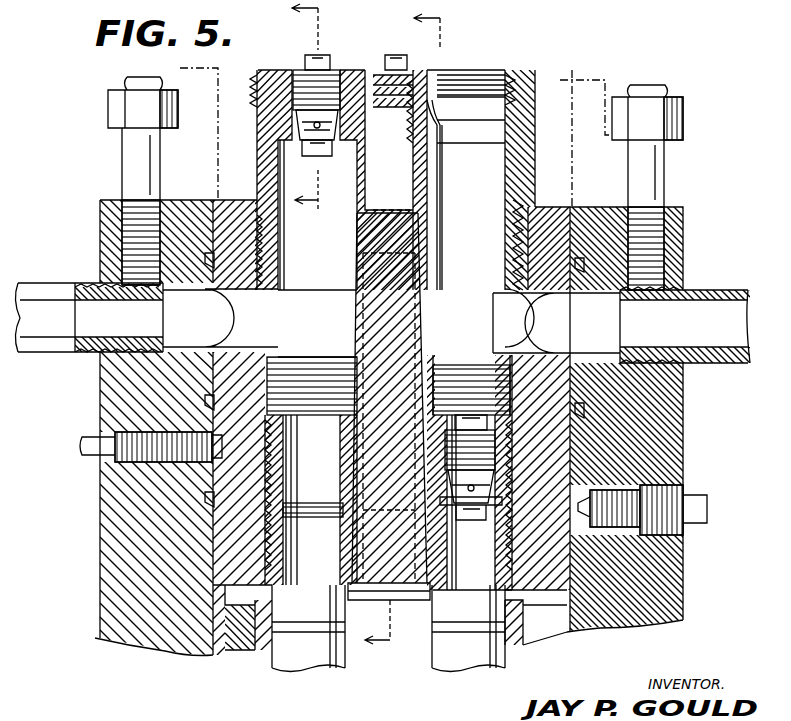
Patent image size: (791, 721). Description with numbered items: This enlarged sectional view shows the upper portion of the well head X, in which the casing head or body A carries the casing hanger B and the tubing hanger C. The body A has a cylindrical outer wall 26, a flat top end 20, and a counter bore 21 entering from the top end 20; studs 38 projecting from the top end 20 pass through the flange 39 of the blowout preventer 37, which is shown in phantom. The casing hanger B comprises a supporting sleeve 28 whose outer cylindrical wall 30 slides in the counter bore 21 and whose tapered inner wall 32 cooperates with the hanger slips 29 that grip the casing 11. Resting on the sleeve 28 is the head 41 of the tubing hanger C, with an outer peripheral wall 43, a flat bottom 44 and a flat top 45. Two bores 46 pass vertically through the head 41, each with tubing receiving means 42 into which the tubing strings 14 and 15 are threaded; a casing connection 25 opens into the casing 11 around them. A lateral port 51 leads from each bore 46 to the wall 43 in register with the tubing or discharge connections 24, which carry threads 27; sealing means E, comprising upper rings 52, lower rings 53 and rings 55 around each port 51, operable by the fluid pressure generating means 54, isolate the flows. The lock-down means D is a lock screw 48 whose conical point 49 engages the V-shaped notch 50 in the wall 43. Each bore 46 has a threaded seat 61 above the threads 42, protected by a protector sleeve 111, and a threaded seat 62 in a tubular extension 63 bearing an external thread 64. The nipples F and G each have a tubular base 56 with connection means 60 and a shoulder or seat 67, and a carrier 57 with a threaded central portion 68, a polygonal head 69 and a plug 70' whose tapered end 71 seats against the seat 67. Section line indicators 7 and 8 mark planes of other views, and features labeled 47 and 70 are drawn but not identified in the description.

The blowout preventer 37 is at (180, 69).
The flange 39 is at (108, 135).
The studs 38 is at (138, 150).
The top end 20 is at (117, 202).
The sealing means E is at (100, 232).
The tubing or discharge connections 24 is at (42, 283).
The threads 27 is at (95, 354).
The lock screw 48 is at (120, 432).
The lock-down means D is at (72, 451).
The cylindrical outer wall 26 is at (100, 505).
The tubing hanger C is at (213, 547).
The outer cylindrical wall 30 is at (213, 617).
The casing hanger B is at (207, 654).
The hanger slips 29 is at (233, 657).
The casing 11 is at (255, 660).
The tubing string 14 is at (308, 665).
The tubing string 15 is at (483, 665).
The flat bottom 44 is at (413, 595).
The section line 7- 7 is at (430, 331).
The section line 8- 8 is at (320, 107).
The outer peripheral wall 43 is at (205, 210).
The flat top 45 is at (240, 205).
The nipples G is at (257, 122).
The connection means 60 is at (258, 98).
The shoulder or seat 67 is at (300, 128).
The tapered end 71 is at (318, 143).
The tubular base 56 is at (283, 63).
The central portion 68 is at (312, 85).
The head 69 is at (322, 56).
The carrier 57 is at (341, 64).
The threaded seat 62 is at (400, 70).
The casing connection 25 is at (425, 70).
The tubular extensions 63 is at (376, 160).
The external thread 64 is at (540, 82).
The head 41 is at (563, 209).
The well head X is at (698, 226).
The upper rings 52 is at (575, 265).
The rings 55 is at (213, 355).
The lateral port 51 is at (520, 346).
The bore 46 is at (428, 329).
The V-shaped notch 50 is at (220, 432).
The conical point 49 is at (222, 455).
The counter bore 21 is at (213, 482).
The protector sleeve 111 is at (275, 505).
The collar 47 is at (268, 553).
The tubing receiving means 42 is at (264, 582).
The threaded seat 61 is at (353, 445).
The tapered valve 70 is at (341, 150).
The plug 70' is at (519, 472).
The lower rings 53 is at (580, 410).
The nipple F is at (500, 447).
The casing head or body A is at (691, 436).
The fluid pressure generating means 54 is at (640, 487).
The tapered inner wall 32 is at (548, 640).
The supporting sleeve 28 is at (560, 632).